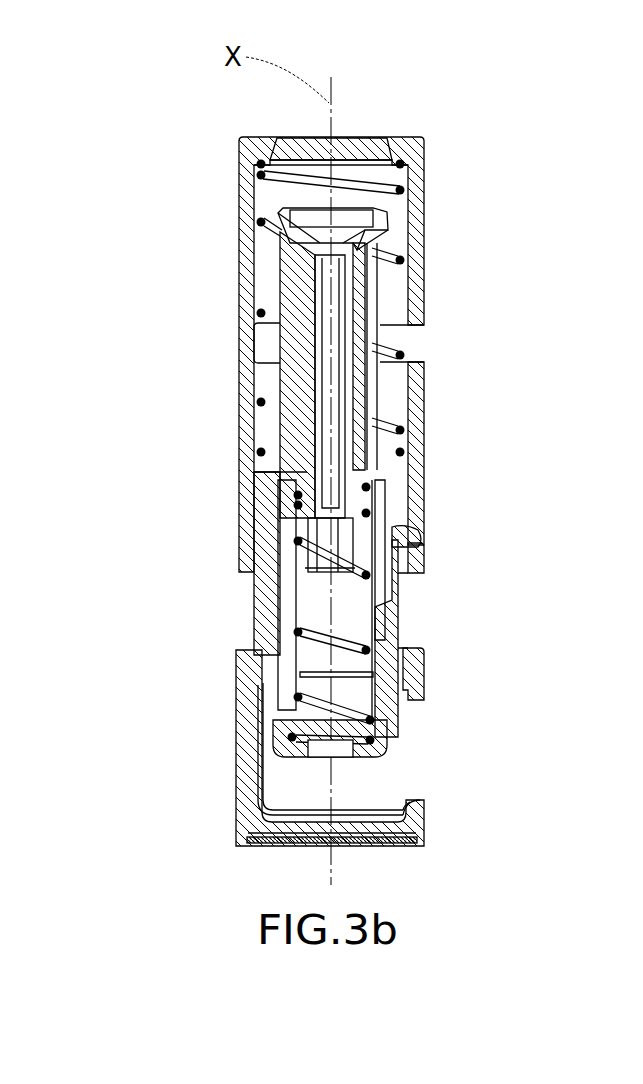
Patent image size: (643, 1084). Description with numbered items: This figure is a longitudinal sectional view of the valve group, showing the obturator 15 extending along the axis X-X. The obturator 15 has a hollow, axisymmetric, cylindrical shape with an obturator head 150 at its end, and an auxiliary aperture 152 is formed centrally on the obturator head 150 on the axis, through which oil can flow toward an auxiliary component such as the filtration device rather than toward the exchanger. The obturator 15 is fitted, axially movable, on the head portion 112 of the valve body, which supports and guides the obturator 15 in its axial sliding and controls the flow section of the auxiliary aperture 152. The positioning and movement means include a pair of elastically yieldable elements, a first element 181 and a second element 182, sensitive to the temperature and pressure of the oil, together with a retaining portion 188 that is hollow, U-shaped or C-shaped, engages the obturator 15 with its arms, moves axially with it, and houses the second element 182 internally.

The obturator 15 is at (462, 241).
The obturator head 150 is at (413, 153).
The auxiliary aperture 152 is at (359, 148).
The head portion 112 is at (293, 267).
The first element 181 is at (273, 408).
The second element 182 is at (308, 632).
The retaining portion 188 is at (278, 738).